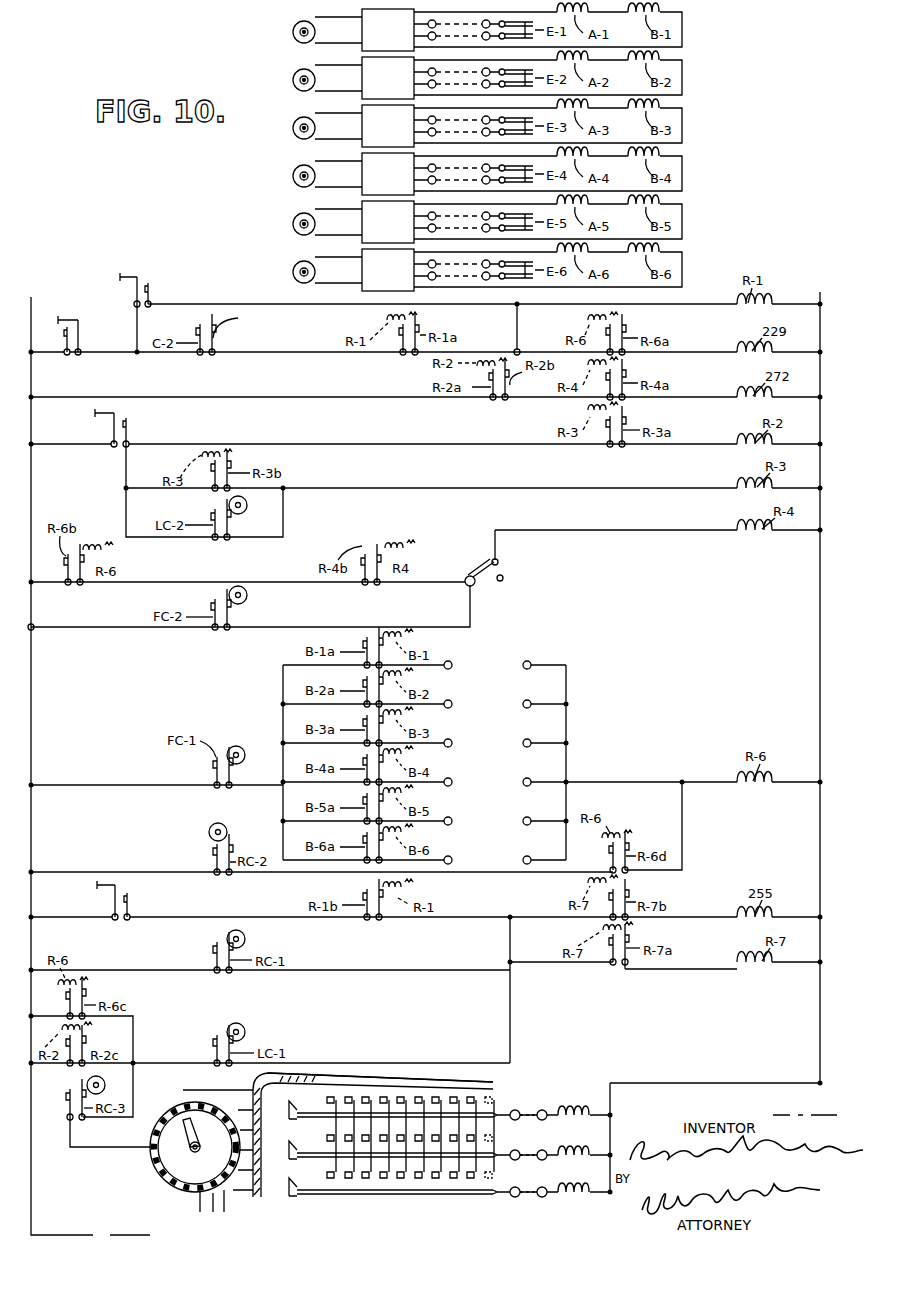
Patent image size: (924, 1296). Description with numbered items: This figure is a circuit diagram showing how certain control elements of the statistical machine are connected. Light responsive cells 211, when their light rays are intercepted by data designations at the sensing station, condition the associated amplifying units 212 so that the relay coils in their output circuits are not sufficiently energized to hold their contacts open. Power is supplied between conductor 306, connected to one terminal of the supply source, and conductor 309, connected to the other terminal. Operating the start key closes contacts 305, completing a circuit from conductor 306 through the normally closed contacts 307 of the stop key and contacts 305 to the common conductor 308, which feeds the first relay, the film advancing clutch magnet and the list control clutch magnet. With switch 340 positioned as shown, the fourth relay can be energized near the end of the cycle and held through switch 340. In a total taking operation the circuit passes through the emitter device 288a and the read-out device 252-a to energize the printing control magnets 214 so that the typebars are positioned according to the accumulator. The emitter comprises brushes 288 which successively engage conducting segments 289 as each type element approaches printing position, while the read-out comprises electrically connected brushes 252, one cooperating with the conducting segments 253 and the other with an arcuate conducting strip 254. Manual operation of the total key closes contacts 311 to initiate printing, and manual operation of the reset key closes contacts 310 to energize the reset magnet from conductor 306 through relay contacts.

The light responsive cells 211 is at (293, 31).
The amplifying units 212 is at (362, 50).
The start key contacts 305 is at (153, 293).
The stop key contacts 307 is at (76, 337).
The common conductor 308 is at (338, 306).
The total key contacts 311 is at (132, 434).
The conductor 306 is at (31, 698).
The conductor 309 is at (820, 680).
The switch 340 is at (478, 586).
The reset key contacts 310 is at (110, 907).
The read-out device 252-a is at (501, 1086).
The printing control magnets 214 is at (568, 1125).
The brushes 288 is at (190, 1150).
The emitter device 288a is at (178, 1180).
The conducting segments 289 is at (224, 1212).
The brushes 252 is at (290, 1195).
The conducting segments 253 is at (448, 1180).
The arcuate conducting strip 254 is at (472, 1196).